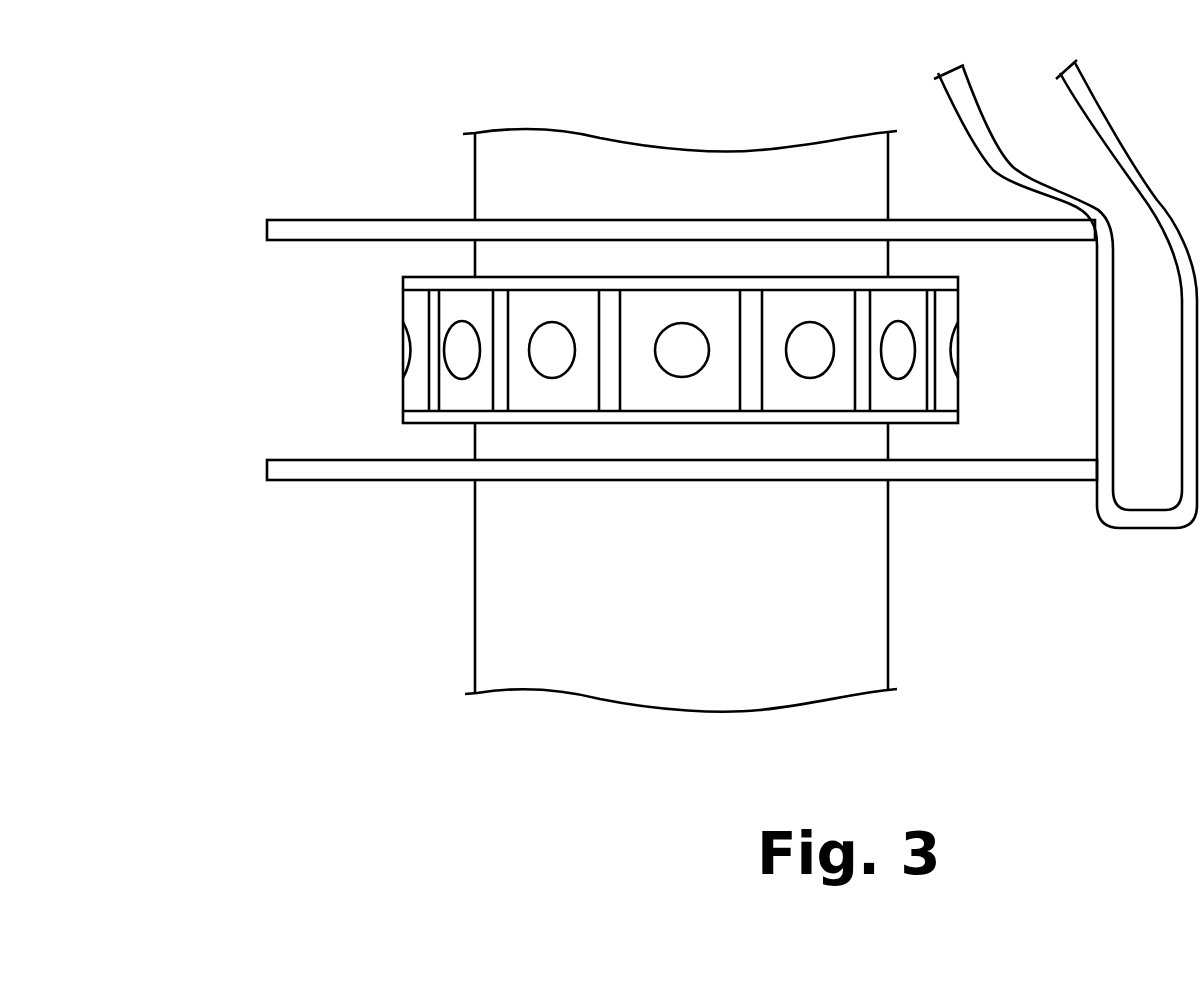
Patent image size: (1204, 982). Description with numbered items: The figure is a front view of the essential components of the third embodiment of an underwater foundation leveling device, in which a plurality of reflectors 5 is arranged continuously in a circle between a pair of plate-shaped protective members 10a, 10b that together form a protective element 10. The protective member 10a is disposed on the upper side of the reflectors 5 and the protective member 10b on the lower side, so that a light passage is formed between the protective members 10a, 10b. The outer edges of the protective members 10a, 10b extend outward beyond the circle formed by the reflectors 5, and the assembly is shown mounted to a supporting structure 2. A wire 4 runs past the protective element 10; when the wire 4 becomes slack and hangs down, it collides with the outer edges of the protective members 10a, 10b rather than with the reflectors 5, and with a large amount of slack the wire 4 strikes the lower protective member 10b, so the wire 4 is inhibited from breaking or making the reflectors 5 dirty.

The support member 2 is at (863, 625).
The wire 4 is at (1070, 99).
The reflectors 5 is at (407, 362).
The protective element 10 is at (651, 351).
The protective member 10a is at (312, 227).
The protective member 10b is at (682, 504).